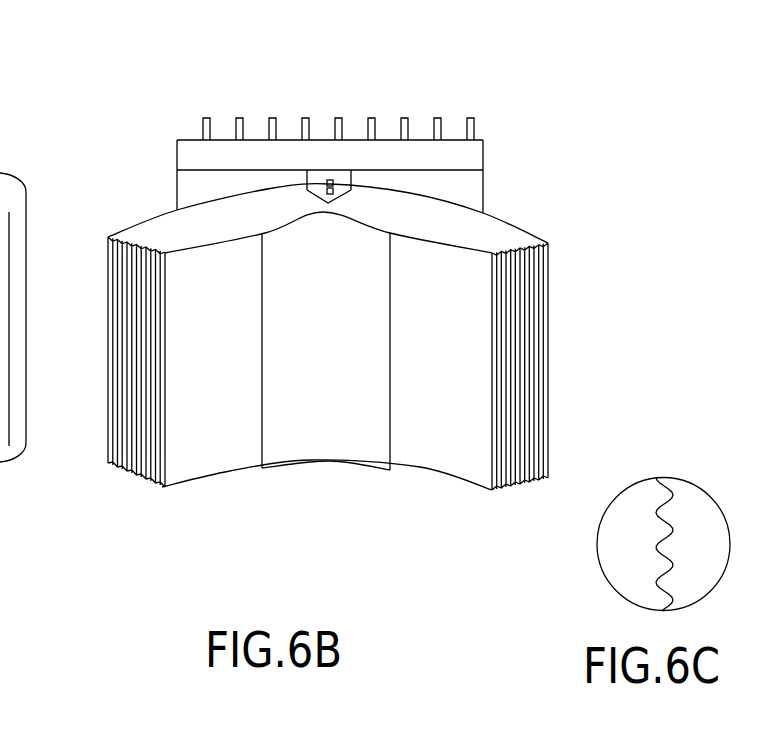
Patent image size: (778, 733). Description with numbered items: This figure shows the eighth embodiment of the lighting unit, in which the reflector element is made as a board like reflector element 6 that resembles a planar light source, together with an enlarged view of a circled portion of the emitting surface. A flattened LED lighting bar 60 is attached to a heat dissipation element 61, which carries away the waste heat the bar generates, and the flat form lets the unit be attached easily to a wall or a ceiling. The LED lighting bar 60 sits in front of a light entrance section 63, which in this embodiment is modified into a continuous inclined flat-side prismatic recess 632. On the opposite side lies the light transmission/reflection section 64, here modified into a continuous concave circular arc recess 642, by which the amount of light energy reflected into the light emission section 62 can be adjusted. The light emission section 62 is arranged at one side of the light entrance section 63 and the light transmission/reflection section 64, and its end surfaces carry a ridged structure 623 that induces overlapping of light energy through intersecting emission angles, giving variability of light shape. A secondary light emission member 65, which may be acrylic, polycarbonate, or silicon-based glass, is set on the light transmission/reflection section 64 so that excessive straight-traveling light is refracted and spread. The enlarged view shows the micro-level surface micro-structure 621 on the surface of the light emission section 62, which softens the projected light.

In FIG. 6B, the board like reflector element 6 is at (355, 108).
In FIG. 6B, the heat dissipation element 61 is at (373, 162).
In FIG. 6B, the LED lighting bar 60 is at (333, 184).
In FIG. 6B, the light entrance section 63 is at (173, 135).
In FIG. 6B, the continuous inclined flat-side prismatic recess 632 is at (325, 198).
In FIG. 6B, the light transmission/reflection section 64 is at (538, 213).
In FIG. 6B, the continuous concave circular arc recess 642 is at (352, 188).
In FIG. 6B, the light emission section 62 is at (187, 228).
In FIG. 6B, the ridged structure 623 is at (127, 365).
In FIG. 6B, the secondary light emission member 65 is at (342, 408).
In FIG. 6C, the micro-level surface micro-structure 621 is at (672, 503).